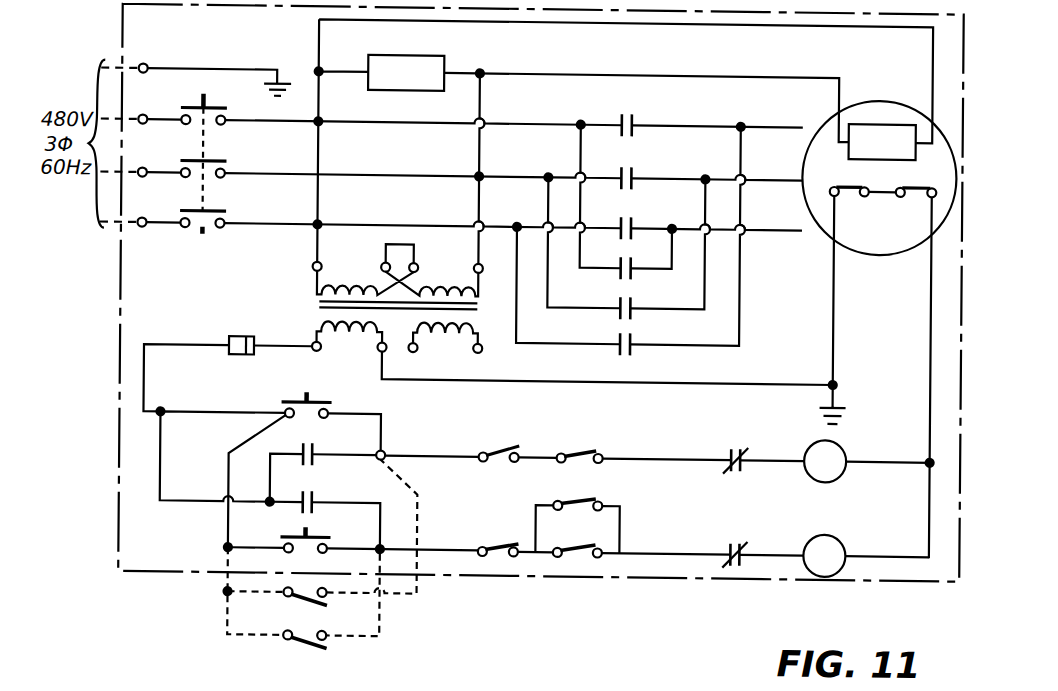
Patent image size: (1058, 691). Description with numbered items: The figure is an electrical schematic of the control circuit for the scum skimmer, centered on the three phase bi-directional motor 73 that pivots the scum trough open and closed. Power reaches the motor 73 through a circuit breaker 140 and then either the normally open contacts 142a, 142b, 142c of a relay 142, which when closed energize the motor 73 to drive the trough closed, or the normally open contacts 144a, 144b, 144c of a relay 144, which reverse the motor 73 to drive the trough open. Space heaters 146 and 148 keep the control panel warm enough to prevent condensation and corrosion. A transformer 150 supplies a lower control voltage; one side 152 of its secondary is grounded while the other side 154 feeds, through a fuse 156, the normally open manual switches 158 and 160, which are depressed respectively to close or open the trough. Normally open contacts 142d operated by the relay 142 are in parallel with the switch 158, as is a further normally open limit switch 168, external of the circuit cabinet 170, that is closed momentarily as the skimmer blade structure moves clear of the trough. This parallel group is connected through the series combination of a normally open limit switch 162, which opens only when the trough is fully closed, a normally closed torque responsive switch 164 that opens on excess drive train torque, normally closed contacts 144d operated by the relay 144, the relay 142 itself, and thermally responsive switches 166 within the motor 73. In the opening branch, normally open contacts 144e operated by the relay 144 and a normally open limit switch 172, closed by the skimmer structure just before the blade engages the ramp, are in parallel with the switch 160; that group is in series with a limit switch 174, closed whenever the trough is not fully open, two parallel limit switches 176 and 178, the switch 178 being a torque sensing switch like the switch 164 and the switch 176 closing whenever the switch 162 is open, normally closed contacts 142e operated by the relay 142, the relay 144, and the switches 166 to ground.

The circuit breaker 140 is at (202, 236).
The space heater 146 is at (443, 56).
The space heater 148 is at (889, 114).
The bi-directional motor 73 is at (895, 246).
The thermally responsive switches 166 is at (905, 215).
The normally open contact 142a is at (644, 103).
The normally open contact 142b is at (644, 156).
The normally open contact 142c is at (633, 221).
The normally open contact 144a is at (633, 272).
The normally open contact 144b is at (633, 312).
The normally open contact 144c is at (633, 348).
The transformer 150 is at (318, 303).
The one side of the transformer secondary 152 is at (515, 378).
The other side of the transformer secondary 154 is at (262, 350).
The fuse 156 is at (232, 354).
The manually operable switch 158 is at (310, 398).
The manually operable switch 160 is at (330, 512).
The normally open contacts 142d is at (316, 462).
The normally open contacts 144e is at (304, 511).
The limit switch 168 is at (298, 603).
The limit switch 172 is at (303, 646).
The limit switch 162 is at (500, 442).
The torque responsive switch 164 is at (584, 442).
The normally closed contacts 144d is at (728, 438).
The relay 142 is at (838, 468).
The limit switch 174 is at (504, 538).
The circuit cabinet 170 is at (634, 575).
The limit switch 176 is at (583, 497).
The torque sensing switch 178 is at (580, 552).
The normally closed contacts 142e is at (730, 538).
The relay 144 is at (846, 541).